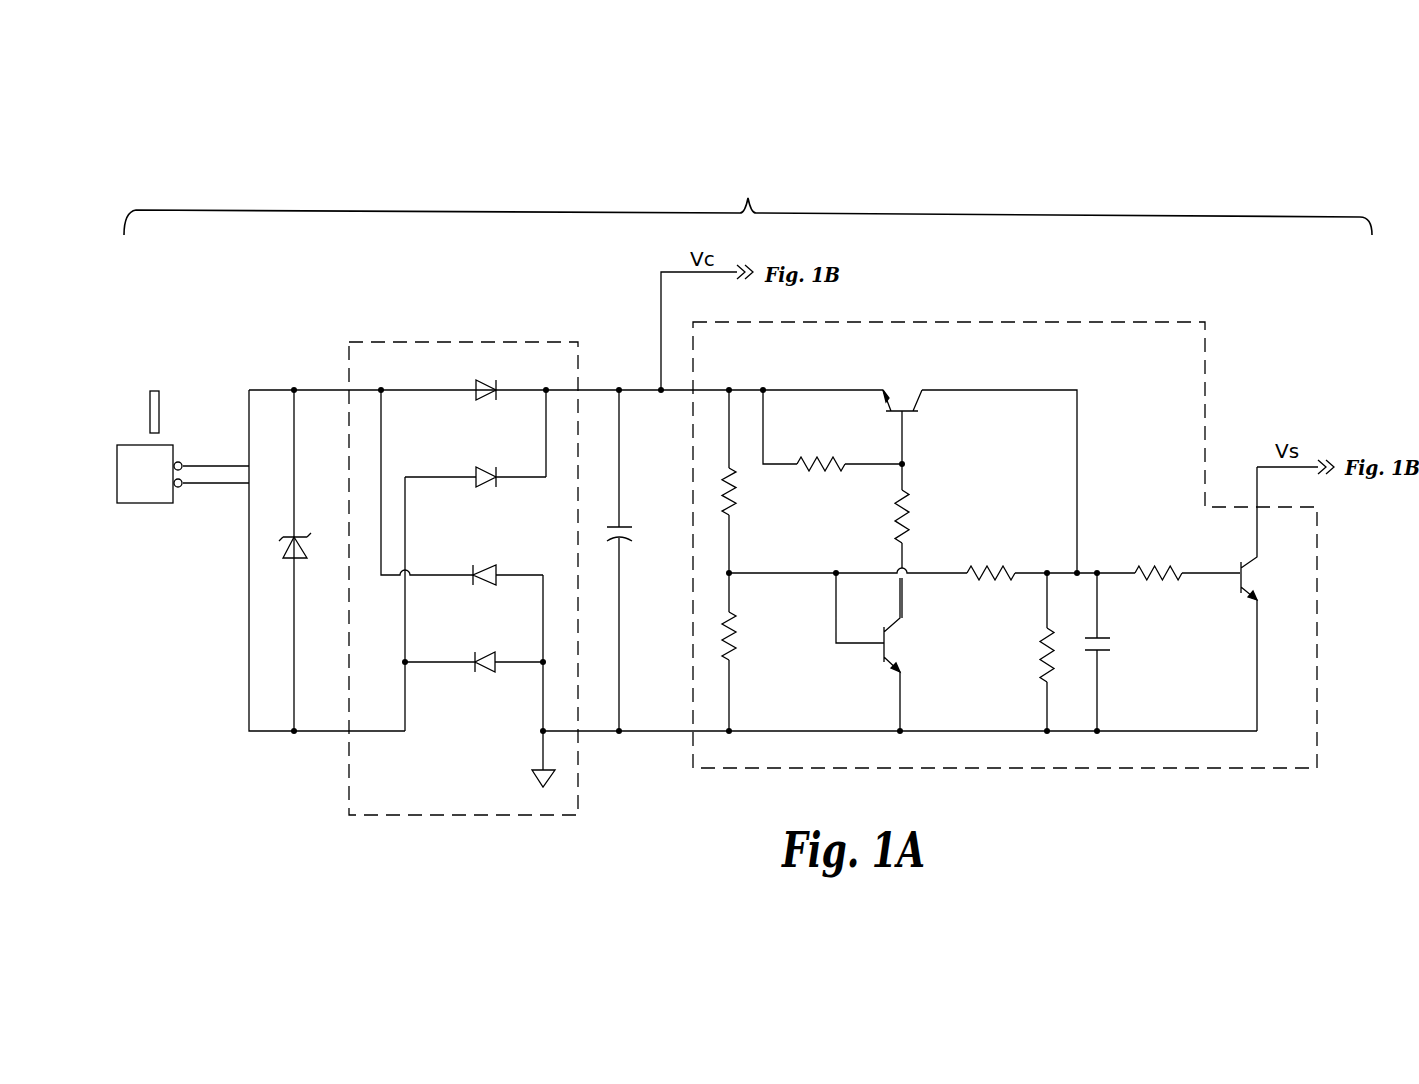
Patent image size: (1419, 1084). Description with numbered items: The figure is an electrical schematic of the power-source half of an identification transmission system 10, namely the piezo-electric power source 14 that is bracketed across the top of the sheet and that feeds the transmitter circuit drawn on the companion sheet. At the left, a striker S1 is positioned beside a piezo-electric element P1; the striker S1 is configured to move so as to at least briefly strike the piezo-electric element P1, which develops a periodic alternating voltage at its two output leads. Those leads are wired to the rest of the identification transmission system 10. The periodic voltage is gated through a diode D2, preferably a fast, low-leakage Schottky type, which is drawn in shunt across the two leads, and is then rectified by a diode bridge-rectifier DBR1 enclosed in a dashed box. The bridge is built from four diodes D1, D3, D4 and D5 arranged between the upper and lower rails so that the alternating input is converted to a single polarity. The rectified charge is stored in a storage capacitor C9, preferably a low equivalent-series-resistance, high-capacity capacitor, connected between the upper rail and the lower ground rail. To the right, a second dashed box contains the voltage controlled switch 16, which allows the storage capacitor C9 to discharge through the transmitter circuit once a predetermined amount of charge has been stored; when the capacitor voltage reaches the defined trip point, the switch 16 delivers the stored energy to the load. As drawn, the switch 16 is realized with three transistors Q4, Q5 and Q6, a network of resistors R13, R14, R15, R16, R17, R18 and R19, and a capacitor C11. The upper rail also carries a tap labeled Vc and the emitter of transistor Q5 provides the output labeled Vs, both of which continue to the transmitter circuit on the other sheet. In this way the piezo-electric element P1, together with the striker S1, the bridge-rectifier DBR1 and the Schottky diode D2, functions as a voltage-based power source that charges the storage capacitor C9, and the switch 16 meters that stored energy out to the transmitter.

The identification transmission system 10 is at (1100, 178).
The piezo-electric power source 14 is at (748, 201).
The voltage controlled switch 16 is at (1142, 312).
The piezo-electric element P1 is at (149, 458).
The striker S1 is at (160, 402).
The diode D1 is at (477, 388).
The diode D2 is at (307, 560).
The diode D3 is at (475, 475).
The diode D4 is at (491, 574).
The diode D5 is at (474, 661).
The diode bridge-rectifier DBR1 is at (412, 330).
The storage capacitor C9 is at (630, 560).
The capacitor C11 is at (1124, 652).
The resistor R13 is at (756, 481).
The resistor R14 is at (931, 541).
The resistor R15 is at (991, 559).
The resistor R16 is at (1158, 559).
The resistor R17 is at (759, 653).
The resistor R18 is at (832, 429).
The resistor R19 is at (1019, 652).
The transistor Q4 is at (904, 404).
The transistor Q5 is at (1257, 599).
The transistor Q6 is at (886, 652).